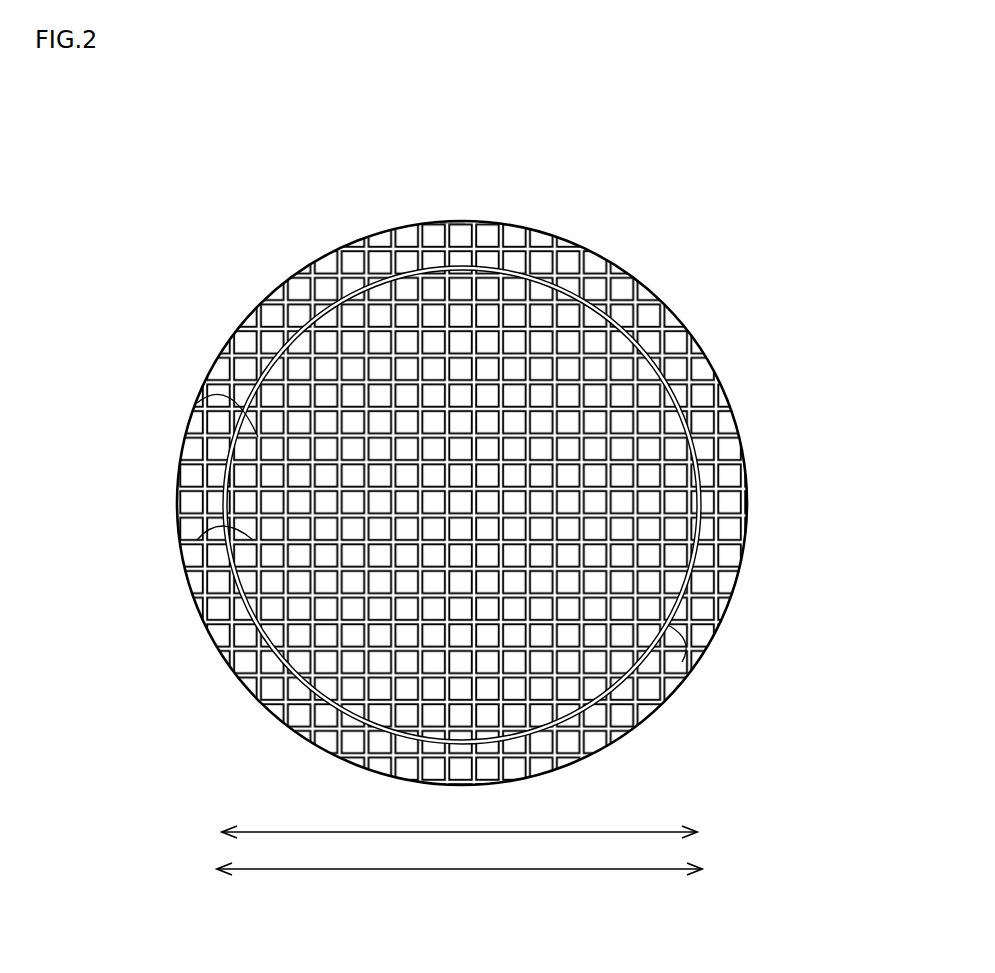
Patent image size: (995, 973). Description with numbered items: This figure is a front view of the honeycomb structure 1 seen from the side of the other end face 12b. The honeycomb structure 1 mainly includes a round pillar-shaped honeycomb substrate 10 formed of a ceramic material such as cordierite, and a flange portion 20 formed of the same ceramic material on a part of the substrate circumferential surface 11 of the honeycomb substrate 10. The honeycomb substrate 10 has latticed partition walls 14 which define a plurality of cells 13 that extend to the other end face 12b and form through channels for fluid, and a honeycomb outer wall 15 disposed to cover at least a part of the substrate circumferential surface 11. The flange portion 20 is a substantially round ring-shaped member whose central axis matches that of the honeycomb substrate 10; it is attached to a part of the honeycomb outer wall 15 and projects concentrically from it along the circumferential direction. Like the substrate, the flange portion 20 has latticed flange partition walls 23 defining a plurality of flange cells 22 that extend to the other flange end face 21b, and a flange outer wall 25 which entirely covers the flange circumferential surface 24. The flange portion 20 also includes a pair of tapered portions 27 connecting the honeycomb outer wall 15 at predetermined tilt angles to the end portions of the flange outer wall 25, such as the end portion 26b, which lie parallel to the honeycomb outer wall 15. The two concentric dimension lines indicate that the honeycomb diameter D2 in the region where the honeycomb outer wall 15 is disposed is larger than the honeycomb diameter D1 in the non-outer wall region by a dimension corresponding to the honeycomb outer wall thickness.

The honeycomb structure 1 is at (237, 134).
The flange portion 20 is at (238, 301).
The substrate circumferential surface 11 is at (628, 684).
The flange cells 22 is at (543, 230).
The other end face 12b is at (717, 387).
The flange outer wall 25 is at (637, 277).
The flange partition walls 23 is at (517, 476).
The tapered portions 27 is at (587, 272).
The flange circumferential surface 24 is at (517, 505).
The end portion of the flange outer wall 26b is at (673, 312).
The other flange end face 21b is at (452, 219).
The partition walls 14 is at (197, 403).
The cells 13 is at (197, 540).
The honeycomb outer wall 15 is at (750, 645).
The honeycomb substrate 10 is at (695, 657).
The honeycomb diameter in the non-outer wall region D1 is at (612, 831).
The honeycomb diameter in the outer wall region D2 is at (372, 871).